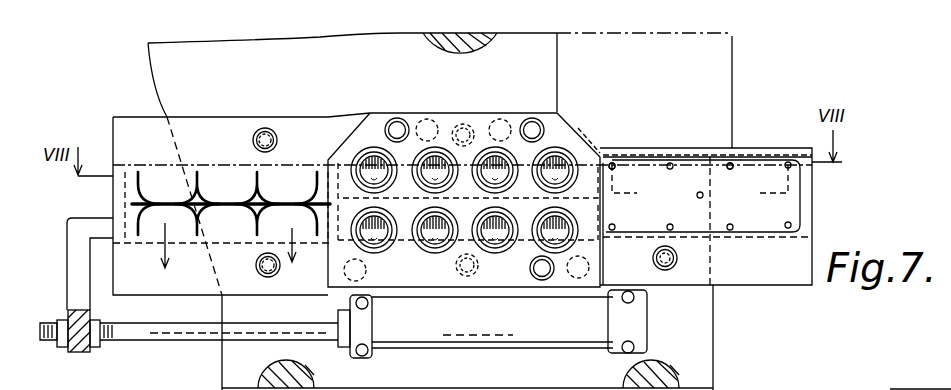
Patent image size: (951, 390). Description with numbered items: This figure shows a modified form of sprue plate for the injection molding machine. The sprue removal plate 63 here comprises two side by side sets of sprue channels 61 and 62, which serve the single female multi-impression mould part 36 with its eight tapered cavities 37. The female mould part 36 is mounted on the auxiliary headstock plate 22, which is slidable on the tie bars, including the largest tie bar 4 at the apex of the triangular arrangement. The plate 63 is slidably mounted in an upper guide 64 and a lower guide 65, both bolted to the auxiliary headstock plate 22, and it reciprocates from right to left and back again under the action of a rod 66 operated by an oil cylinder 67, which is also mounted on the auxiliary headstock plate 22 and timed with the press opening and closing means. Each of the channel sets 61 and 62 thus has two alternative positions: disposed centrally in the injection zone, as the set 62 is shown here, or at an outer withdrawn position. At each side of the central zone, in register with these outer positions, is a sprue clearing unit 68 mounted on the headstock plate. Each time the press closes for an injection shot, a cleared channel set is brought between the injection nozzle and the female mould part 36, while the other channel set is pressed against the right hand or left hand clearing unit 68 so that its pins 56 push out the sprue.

The tie bar 4 is at (452, 50).
The auxiliary headstock plate 22 is at (540, 83).
The female mould part 36 is at (485, 113).
The tapered cavities 37 is at (365, 157).
The pins 56 is at (733, 163).
The sprue channel set 61 is at (203, 183).
The sprue channel set 62 is at (603, 163).
The sprue removal plate 63 is at (122, 188).
The upper guide 64 is at (135, 127).
The lower guide 65 is at (183, 277).
The rod 66 is at (190, 338).
The oil cylinder 67 is at (518, 333).
The sprue clearing unit 68 is at (787, 205).